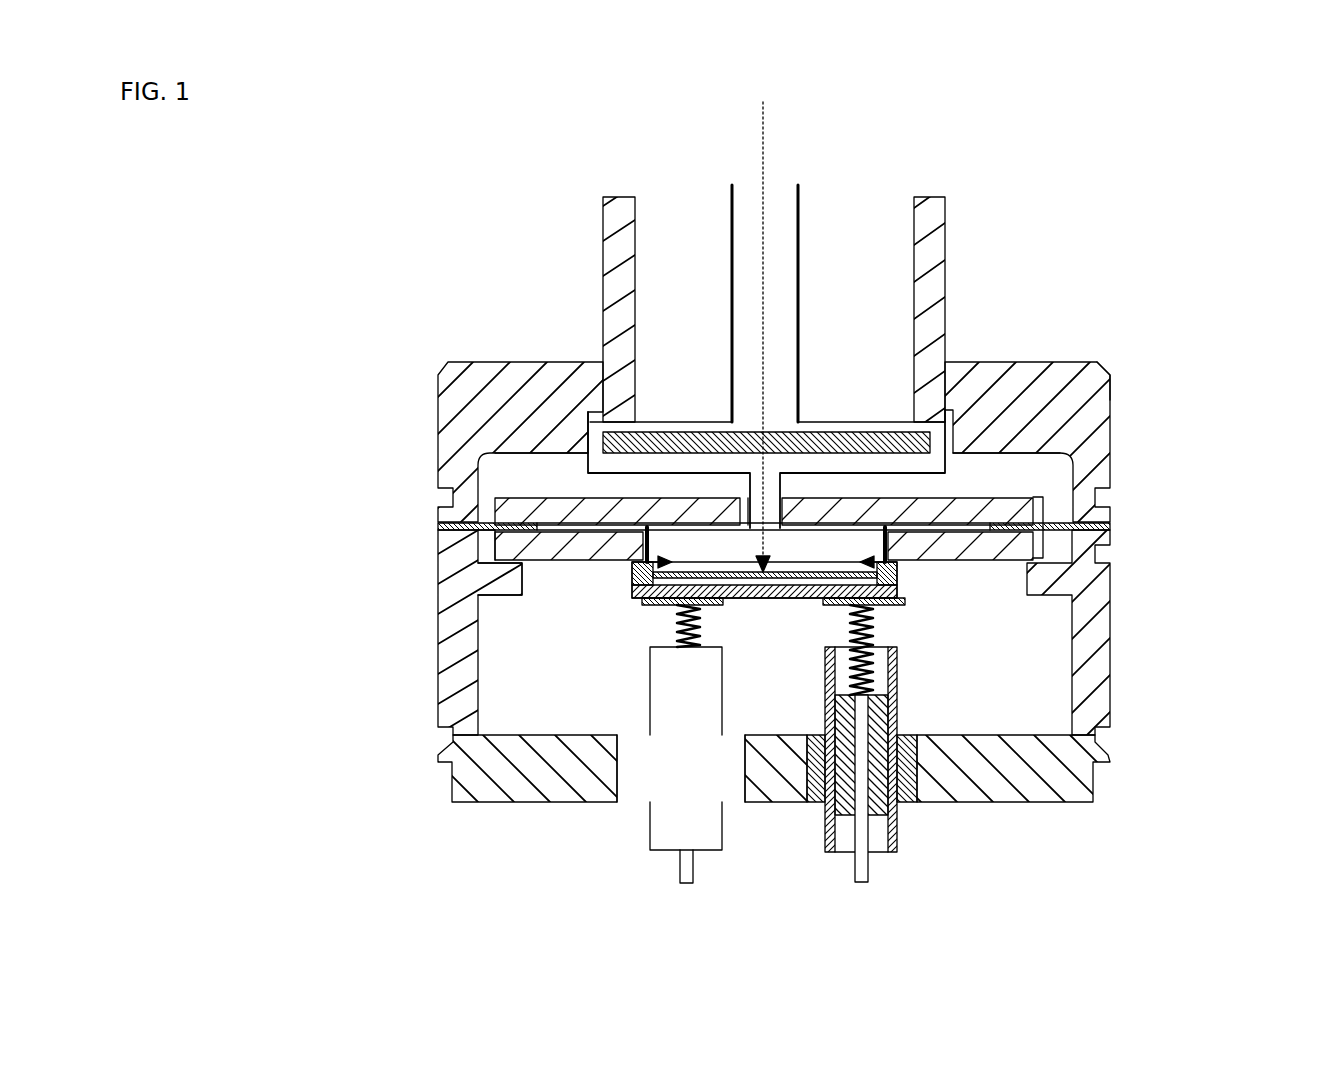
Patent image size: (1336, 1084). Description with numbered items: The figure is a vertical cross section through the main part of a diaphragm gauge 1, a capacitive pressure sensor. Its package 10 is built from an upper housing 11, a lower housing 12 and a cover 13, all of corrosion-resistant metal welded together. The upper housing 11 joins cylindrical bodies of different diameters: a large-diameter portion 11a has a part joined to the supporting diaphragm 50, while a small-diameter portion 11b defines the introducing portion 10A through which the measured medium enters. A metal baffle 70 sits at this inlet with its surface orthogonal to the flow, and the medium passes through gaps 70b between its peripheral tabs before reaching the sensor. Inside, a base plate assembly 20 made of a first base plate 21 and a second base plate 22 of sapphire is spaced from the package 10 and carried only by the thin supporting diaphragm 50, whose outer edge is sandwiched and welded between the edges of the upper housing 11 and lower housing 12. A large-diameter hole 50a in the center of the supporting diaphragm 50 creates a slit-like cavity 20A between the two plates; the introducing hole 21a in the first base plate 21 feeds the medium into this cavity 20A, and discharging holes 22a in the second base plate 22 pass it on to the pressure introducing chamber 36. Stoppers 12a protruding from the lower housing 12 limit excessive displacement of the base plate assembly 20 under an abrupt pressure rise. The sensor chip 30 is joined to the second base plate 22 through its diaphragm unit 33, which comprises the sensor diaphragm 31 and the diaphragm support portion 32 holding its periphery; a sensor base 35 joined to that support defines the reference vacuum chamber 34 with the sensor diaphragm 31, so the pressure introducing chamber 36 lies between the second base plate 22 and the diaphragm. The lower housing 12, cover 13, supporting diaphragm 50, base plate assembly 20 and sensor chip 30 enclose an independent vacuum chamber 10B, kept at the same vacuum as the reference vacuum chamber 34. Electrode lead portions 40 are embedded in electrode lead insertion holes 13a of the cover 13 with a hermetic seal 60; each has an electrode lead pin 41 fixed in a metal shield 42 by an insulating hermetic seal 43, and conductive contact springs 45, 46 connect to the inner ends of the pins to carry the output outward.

The diaphragm gauge 1 is at (1052, 824).
The package 10 is at (1232, 628).
The introducing portion 10A is at (854, 226).
The vacuum chamber 10B is at (506, 712).
The upper housing 11 is at (1090, 430).
The large-diameter portion 11a is at (1098, 386).
The small-diameter portion 11b is at (928, 214).
The lower housing 12 is at (1086, 660).
The stoppers 12a is at (512, 596).
The cover 13 is at (1090, 778).
The electrode lead insertion holes 13a is at (899, 800).
The base plate assembly 20 is at (322, 333).
The slit-like space (cavity) 20A is at (594, 442).
The first base plate 21 is at (520, 505).
The introducing hole 21a is at (783, 520).
The second base plate 22 is at (520, 545).
The discharging holes 22a is at (648, 556).
The sensor chip 30 is at (910, 598).
The sensor diaphragm 31 is at (678, 602).
The diaphragm support portion 32 is at (644, 574).
The diaphragm unit 33 is at (570, 576).
The reference vacuum chamber 34 is at (890, 572).
The sensor base 35 is at (864, 614).
The pressure introducing chamber 36 is at (792, 572).
The electrode lead portions 40 is at (622, 836).
The electrode lead pin 41 is at (680, 876).
The metal shield 42 is at (898, 850).
The hermetic seal 43 is at (840, 786).
The contact spring 45 is at (660, 652).
The contact spring 46 is at (832, 684).
The supporting diaphragm 50 is at (452, 527).
The large-diameter hole 50a is at (494, 562).
The hermetic seal 60 is at (796, 752).
The baffle 70 is at (713, 438).
The gaps 70b is at (592, 443).